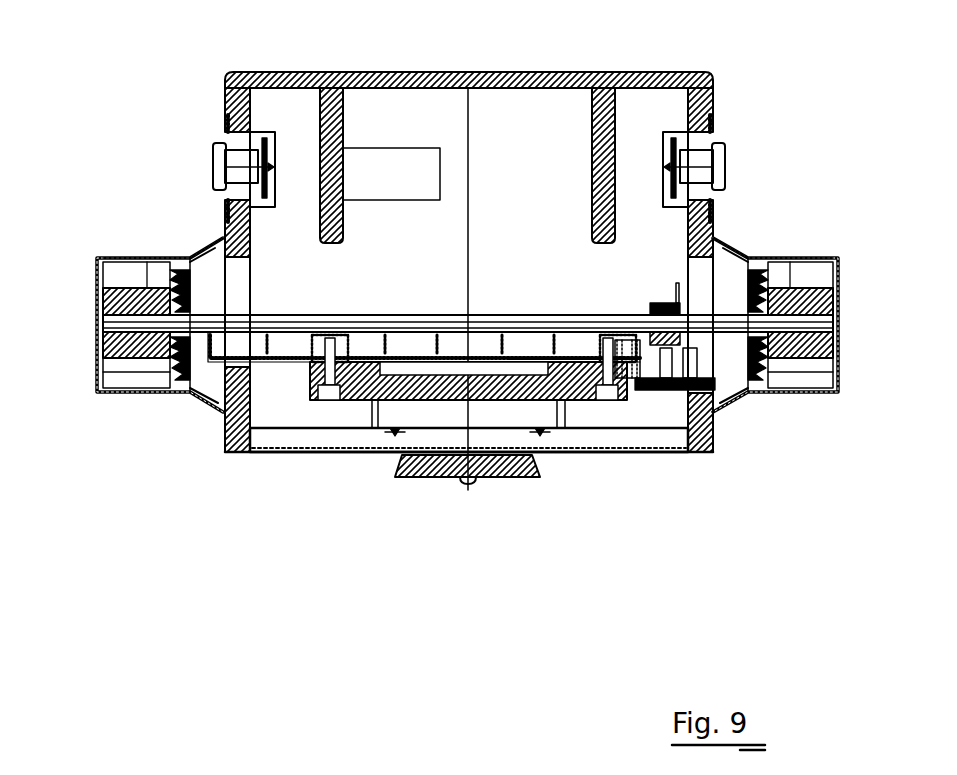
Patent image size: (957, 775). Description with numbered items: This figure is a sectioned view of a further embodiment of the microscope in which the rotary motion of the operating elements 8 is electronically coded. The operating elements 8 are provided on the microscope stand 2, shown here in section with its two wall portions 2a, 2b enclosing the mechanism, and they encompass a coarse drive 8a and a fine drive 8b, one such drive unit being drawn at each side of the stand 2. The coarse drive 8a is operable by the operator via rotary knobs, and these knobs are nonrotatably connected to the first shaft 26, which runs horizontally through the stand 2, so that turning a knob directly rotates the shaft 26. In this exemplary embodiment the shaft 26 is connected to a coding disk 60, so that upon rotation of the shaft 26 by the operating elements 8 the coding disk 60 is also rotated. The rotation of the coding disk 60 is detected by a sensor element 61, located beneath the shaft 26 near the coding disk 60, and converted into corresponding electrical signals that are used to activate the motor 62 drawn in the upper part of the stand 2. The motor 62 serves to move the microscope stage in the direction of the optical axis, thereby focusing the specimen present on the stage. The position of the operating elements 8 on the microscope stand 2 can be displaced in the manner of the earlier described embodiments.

The microscope stand 2 is at (430, 72).
The housing first half 2a is at (225, 100).
The housing second half 2b is at (713, 100).
The operating elements 8 is at (82, 302).
The coarse drive 8a is at (142, 258).
The fine drive 8b is at (208, 246).
The first shaft 26 is at (370, 313).
The coding disk 60 is at (673, 290).
The sensor element 61 is at (663, 390).
The motor 62 is at (372, 200).